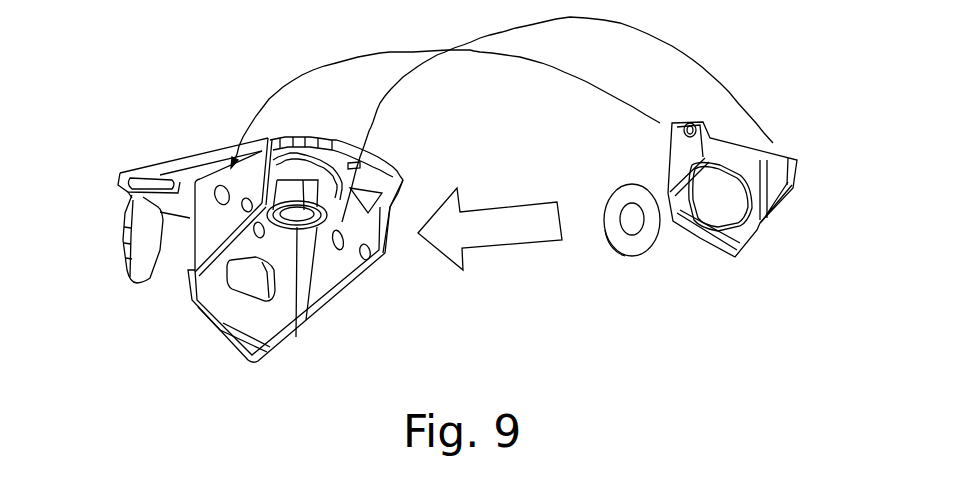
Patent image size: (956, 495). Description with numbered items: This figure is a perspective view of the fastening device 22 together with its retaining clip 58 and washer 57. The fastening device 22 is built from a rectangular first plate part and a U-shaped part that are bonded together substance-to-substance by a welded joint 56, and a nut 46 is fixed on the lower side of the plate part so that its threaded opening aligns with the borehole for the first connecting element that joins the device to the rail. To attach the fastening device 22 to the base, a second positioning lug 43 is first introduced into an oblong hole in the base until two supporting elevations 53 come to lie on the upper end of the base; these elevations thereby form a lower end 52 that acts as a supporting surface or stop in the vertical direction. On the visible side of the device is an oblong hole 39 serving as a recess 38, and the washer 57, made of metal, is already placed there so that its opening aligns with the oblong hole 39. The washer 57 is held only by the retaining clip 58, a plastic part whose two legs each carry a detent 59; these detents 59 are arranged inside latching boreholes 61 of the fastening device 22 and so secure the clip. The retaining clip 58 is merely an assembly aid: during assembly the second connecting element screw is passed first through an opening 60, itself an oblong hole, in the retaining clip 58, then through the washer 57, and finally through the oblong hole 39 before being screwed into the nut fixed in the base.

The fastening device 22 is at (160, 335).
The recess 38 is at (321, 325).
The oblong hole 39 is at (250, 285).
The second positioning lug 43 is at (143, 257).
The nut 46 is at (305, 190).
The lower end 52 is at (132, 195).
The supporting elevations 53 is at (155, 176).
The welded joint 56 is at (403, 175).
The washer 57 is at (637, 240).
The retaining clip 58 is at (748, 237).
The detent 59 is at (690, 124).
The opening 60 is at (725, 227).
The latching boreholes 61 is at (220, 185).